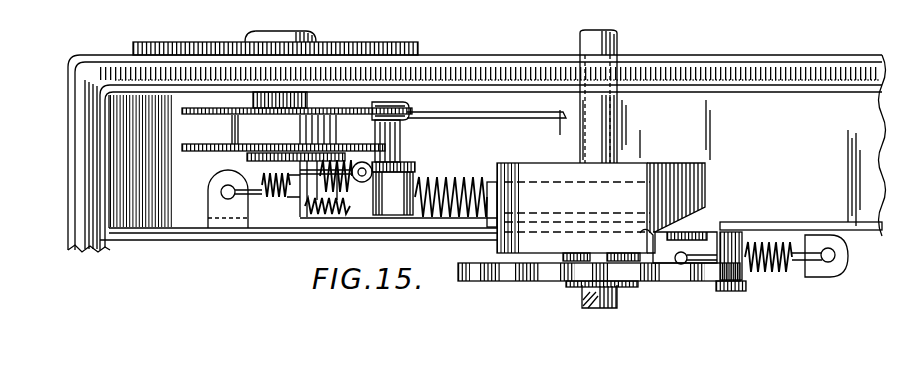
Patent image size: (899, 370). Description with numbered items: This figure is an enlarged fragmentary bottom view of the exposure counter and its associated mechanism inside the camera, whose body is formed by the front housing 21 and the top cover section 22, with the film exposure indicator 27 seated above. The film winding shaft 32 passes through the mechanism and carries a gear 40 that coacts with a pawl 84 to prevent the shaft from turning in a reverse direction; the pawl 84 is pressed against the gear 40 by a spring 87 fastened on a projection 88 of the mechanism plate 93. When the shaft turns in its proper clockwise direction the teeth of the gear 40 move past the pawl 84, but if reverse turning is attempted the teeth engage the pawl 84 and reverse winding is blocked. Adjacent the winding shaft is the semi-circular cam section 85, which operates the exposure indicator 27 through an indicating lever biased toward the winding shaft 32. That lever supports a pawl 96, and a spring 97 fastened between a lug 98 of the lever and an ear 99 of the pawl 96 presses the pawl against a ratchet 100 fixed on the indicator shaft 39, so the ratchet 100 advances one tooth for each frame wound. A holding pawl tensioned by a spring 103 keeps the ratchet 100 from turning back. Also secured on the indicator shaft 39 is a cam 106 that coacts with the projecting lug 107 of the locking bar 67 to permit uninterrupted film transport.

The front housing 21 is at (703, 55).
The top cover section 22 is at (478, 55).
The film exposure indicator 27 is at (415, 42).
The film winding shaft 32 is at (618, 41).
The indicator shaft 39 is at (256, 105).
The gear 40 is at (689, 272).
The locking bar 67 is at (507, 113).
The pawl 84 is at (731, 230).
The semi-circular cam section 85 is at (688, 164).
The spring 87 is at (791, 271).
The projection 88 is at (848, 247).
The mechanism plate 93 is at (786, 224).
The pawl 96 is at (398, 142).
The spring 97 is at (261, 176).
The lug 98 is at (213, 197).
The ear 99 is at (400, 163).
The ratchet 100 is at (215, 146).
The spring 103 is at (340, 217).
The cam 106 is at (218, 114).
The projecting lug 107 is at (410, 108).